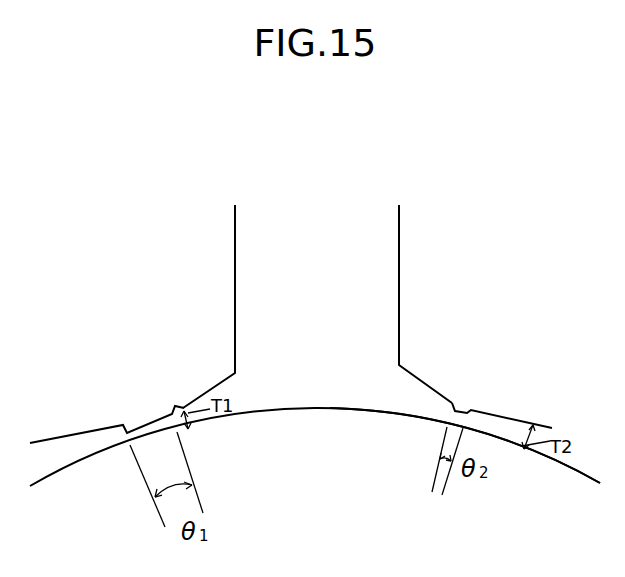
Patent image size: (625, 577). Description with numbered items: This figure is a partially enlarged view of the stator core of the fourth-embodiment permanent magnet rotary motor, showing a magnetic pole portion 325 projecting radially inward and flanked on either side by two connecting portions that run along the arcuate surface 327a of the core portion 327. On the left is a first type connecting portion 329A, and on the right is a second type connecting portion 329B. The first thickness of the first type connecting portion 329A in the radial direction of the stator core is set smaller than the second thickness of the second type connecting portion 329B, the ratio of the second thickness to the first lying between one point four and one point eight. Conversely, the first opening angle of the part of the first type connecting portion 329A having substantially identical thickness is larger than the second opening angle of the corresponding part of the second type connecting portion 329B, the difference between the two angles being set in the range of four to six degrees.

The magnetic pole portion 325 is at (273, 305).
The yoke 327 is at (310, 393).
The surface of yoke 327a is at (362, 410).
The first type connecting portion 329A is at (142, 410).
The second type connecting portion 329B is at (475, 398).